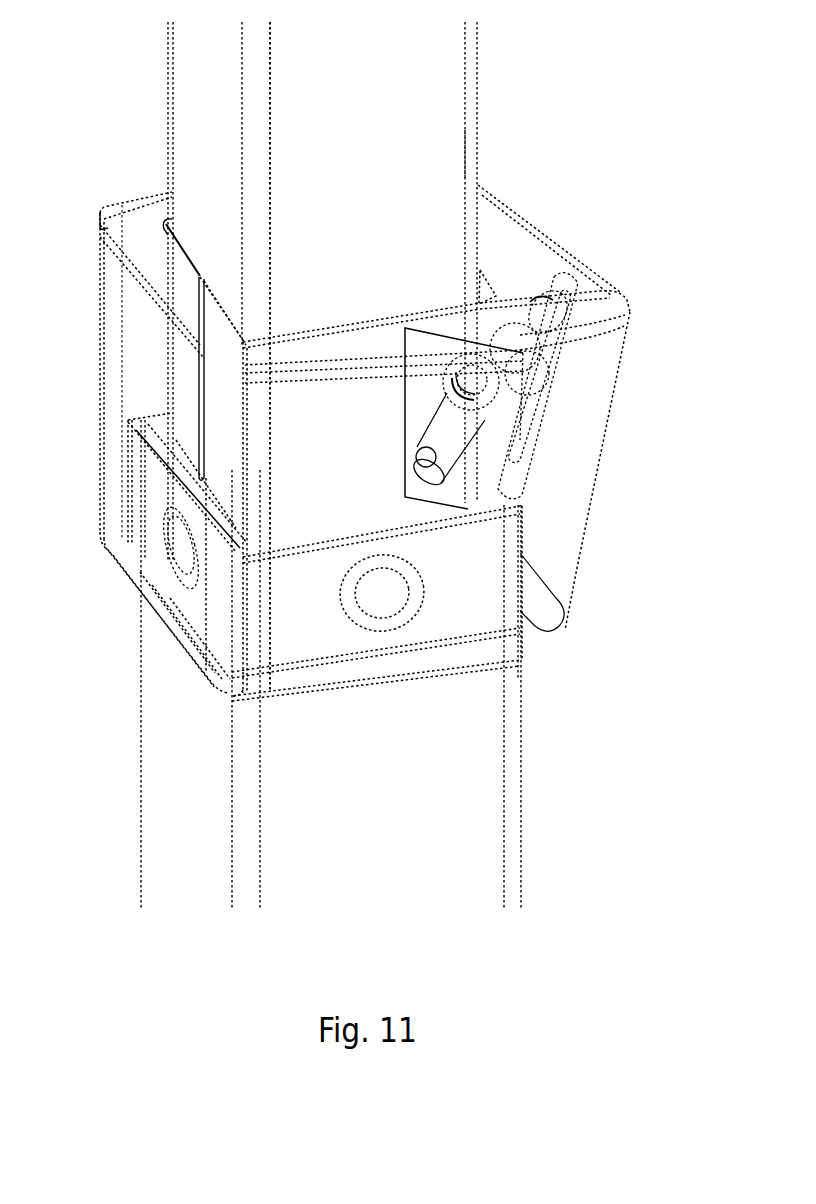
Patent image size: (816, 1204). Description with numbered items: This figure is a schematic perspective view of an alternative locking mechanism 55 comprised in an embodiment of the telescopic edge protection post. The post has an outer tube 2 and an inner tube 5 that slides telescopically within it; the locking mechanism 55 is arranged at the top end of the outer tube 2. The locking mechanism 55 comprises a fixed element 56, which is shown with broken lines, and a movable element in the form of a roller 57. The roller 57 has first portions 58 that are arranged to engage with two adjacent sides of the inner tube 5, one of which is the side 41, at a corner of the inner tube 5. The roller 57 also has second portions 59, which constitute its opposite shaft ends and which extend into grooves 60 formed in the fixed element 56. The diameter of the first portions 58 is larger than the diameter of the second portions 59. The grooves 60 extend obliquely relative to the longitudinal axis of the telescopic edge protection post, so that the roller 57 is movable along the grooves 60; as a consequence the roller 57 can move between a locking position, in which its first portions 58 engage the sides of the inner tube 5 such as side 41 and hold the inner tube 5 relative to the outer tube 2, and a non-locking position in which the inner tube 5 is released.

The outer tube 2 is at (522, 789).
The inner tube 5 is at (480, 61).
The first side of the inner tube 41 is at (420, 143).
The locking mechanism 55 is at (607, 455).
The fixed element 56 is at (577, 567).
The roller 57 is at (538, 385).
The first portions of the roller 58 is at (480, 377).
The second portions of the roller 59 is at (443, 450).
The grooves 60 is at (445, 418).